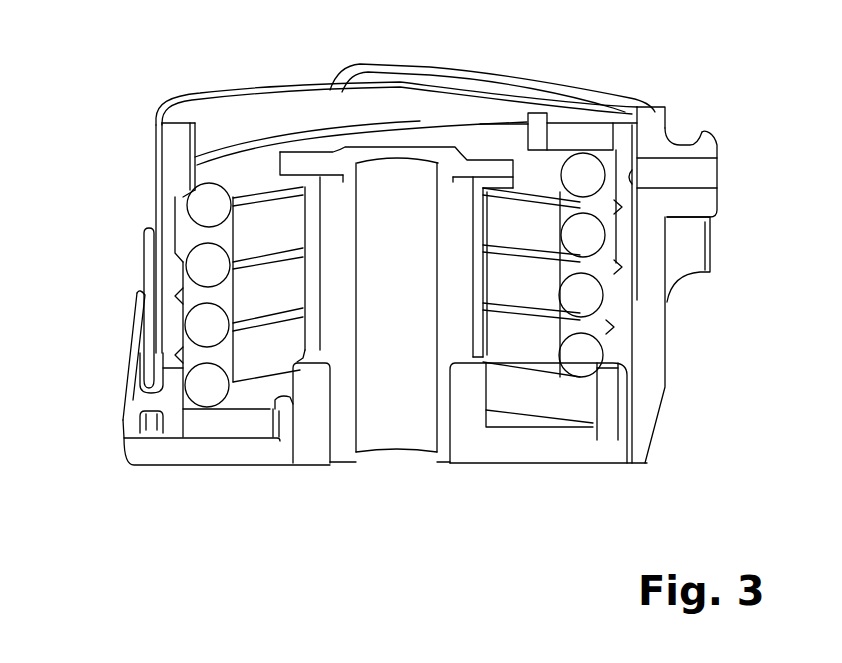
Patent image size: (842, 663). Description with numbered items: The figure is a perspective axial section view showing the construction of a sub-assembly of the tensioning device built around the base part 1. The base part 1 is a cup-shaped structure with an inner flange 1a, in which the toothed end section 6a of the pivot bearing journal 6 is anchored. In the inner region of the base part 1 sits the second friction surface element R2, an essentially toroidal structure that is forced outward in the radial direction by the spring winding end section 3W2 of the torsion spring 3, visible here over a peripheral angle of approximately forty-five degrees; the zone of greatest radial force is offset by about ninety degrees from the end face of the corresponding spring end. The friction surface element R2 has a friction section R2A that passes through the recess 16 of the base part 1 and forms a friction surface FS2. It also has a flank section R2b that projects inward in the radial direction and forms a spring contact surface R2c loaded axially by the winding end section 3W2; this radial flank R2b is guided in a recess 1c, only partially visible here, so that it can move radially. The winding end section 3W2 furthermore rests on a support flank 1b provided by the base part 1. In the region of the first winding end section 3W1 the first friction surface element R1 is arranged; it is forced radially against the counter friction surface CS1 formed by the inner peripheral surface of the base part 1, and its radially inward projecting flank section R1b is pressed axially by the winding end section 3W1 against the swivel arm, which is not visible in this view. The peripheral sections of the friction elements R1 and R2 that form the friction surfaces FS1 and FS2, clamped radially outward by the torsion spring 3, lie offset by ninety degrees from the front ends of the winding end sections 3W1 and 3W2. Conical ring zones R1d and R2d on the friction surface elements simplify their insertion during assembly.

The base part 1 is at (650, 405).
The inner flange 1a is at (474, 394).
The support flank 1b is at (267, 373).
The recess 1c is at (280, 430).
The torsion spring 3 is at (600, 300).
The first torsion spring winding end section 3W1 is at (253, 167).
The second torsion spring winding end section 3W2 is at (270, 352).
The pivot bearing journal 6 is at (440, 338).
The end section of the pivot bearing journal 6a is at (437, 405).
The recess of the base part 16 is at (147, 283).
The first friction surface element R1 is at (625, 150).
The flank section of the first friction surface element R1b is at (560, 116).
The conical ring zone R1d is at (627, 240).
The second friction surface element R2 is at (396, 284).
The friction section R2A is at (137, 400).
The flank section of the second friction surface element R2b is at (197, 427).
The spring contact surface R2c is at (253, 365).
The conical ring zone R2d is at (128, 320).
The friction surface FS1 is at (718, 152).
The friction surface FS2 is at (127, 380).
The counter friction surface CS1 is at (717, 188).